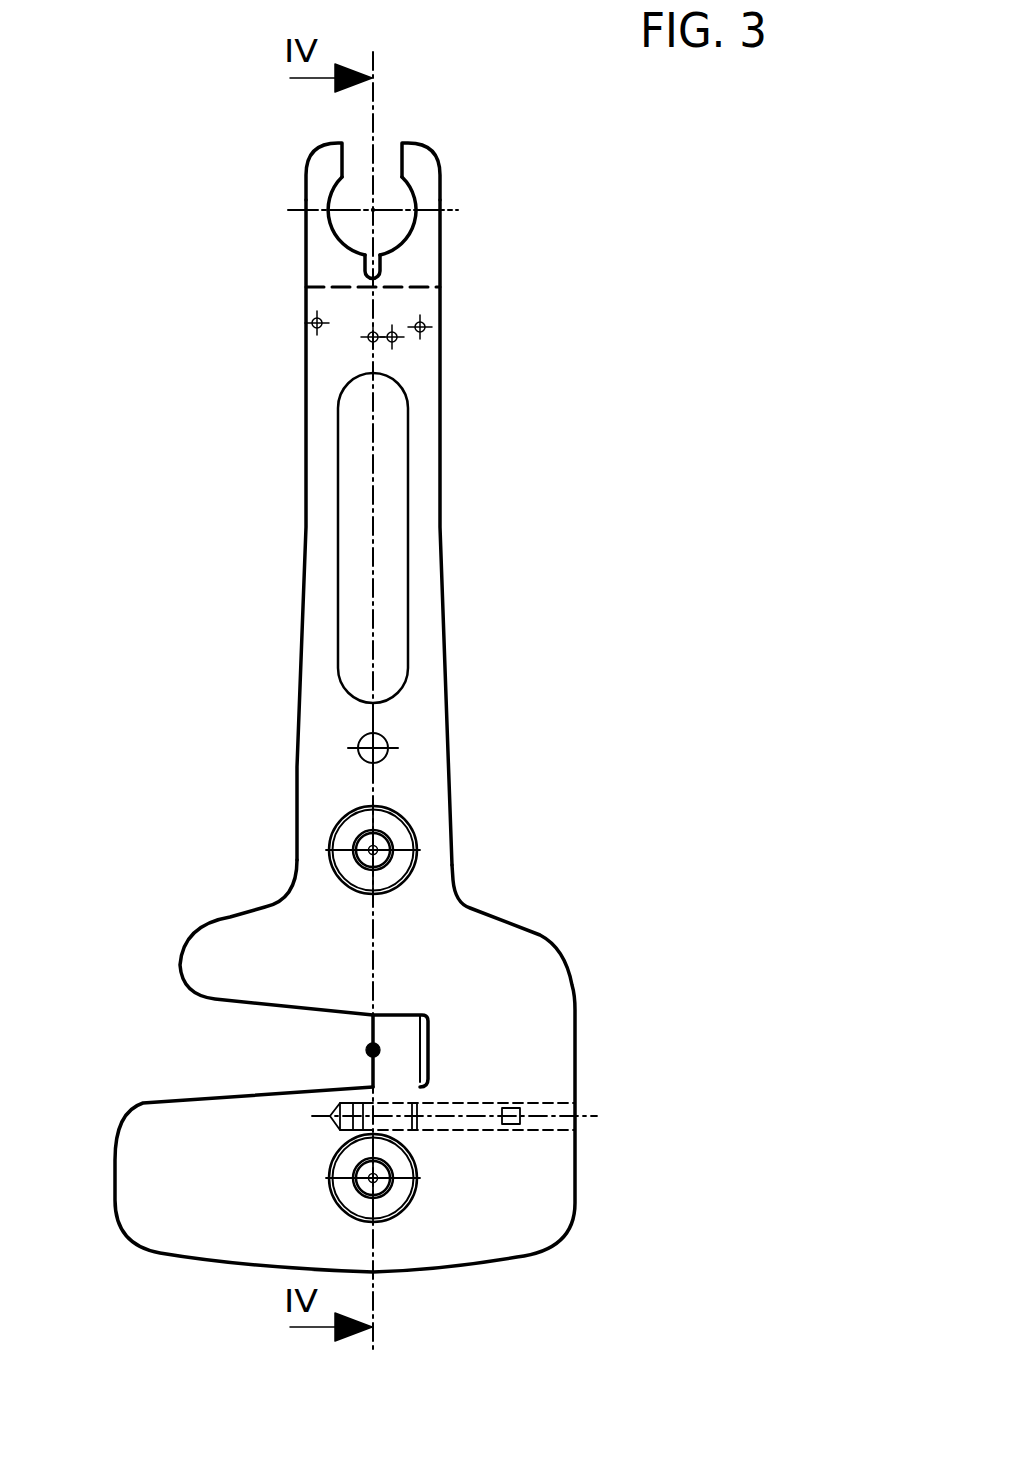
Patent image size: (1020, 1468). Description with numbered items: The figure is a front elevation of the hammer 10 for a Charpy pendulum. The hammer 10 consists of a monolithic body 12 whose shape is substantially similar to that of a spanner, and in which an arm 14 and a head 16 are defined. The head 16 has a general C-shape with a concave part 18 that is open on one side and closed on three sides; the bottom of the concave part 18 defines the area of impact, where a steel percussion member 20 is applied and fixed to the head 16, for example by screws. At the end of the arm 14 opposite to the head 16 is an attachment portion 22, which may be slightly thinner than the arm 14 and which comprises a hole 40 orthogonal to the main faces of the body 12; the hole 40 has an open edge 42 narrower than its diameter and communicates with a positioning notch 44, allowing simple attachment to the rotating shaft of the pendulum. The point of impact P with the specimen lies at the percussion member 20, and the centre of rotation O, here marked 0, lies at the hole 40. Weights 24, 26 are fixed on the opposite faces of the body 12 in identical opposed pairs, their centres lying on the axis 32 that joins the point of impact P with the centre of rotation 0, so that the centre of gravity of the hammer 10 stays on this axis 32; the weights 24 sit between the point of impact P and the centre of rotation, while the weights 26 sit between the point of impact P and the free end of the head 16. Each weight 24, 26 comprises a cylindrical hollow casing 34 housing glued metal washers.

The hammer 10 is at (734, 366).
The monolithic body 12 is at (506, 574).
The arm 14 is at (452, 737).
The head 16 is at (581, 1008).
The concave part 18 is at (273, 1002).
The percussion member 20 is at (405, 1050).
The attachment portion 22 is at (423, 263).
The weights 24 is at (419, 811).
The weights 26 is at (427, 1193).
The axis 32 is at (376, 957).
The cylindrical hollow casing 34 is at (390, 873).
The hole 40 is at (396, 228).
The open edge 42 is at (402, 152).
The positioning notch 44 is at (381, 264).
The centre of rotation 0 is at (372, 212).
The point of impact P is at (366, 1050).